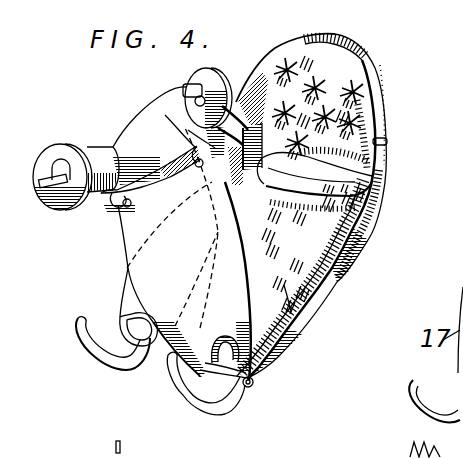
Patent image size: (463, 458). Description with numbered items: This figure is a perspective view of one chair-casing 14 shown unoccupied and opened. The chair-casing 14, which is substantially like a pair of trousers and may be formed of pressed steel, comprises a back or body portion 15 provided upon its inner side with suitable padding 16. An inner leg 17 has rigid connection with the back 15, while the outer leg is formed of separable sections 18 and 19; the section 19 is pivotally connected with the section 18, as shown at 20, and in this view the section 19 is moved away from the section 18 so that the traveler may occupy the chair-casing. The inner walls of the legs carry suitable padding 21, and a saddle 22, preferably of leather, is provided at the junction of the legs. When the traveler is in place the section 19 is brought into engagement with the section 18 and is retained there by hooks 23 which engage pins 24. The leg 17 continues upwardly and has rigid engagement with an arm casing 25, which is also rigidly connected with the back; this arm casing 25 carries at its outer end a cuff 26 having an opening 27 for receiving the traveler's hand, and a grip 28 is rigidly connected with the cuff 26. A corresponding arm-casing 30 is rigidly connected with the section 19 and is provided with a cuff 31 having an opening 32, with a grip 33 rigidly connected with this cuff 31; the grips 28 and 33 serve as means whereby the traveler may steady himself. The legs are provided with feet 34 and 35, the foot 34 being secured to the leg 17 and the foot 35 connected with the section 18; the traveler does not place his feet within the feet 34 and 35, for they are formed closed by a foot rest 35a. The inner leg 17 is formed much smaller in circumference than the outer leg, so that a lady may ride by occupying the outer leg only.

The chair-casing 14 is at (353, 256).
The back or body portion 15 is at (379, 79).
The padding 16 is at (339, 72).
The inner leg 17 is at (127, 292).
The outer leg section 18 is at (318, 305).
The outer leg section 19 is at (200, 297).
The pivot connection 20 is at (251, 386).
The padding 21 is at (296, 338).
The saddle 22 is at (331, 165).
The hooks 23 is at (122, 212).
The pins 24 is at (387, 142).
The arm casing 25 is at (229, 84).
The cuff 26 is at (195, 74).
The opening 27 is at (183, 86).
The grip 28 is at (183, 96).
The arm-casing 30 is at (90, 148).
The cuff 31 is at (63, 190).
The opening 32 is at (53, 183).
The grip 33 is at (53, 180).
The foot 34 is at (120, 360).
The foot 35 is at (185, 388).
The foot rest 35a is at (190, 377).